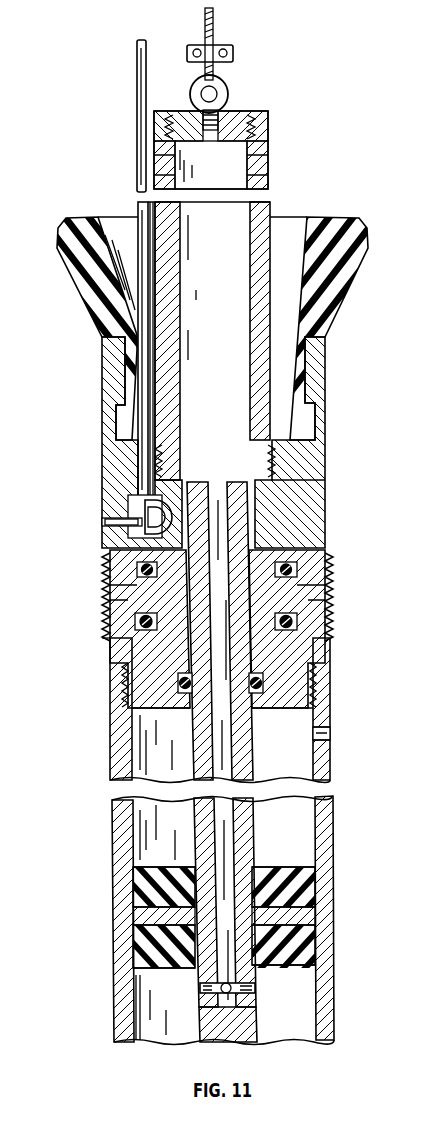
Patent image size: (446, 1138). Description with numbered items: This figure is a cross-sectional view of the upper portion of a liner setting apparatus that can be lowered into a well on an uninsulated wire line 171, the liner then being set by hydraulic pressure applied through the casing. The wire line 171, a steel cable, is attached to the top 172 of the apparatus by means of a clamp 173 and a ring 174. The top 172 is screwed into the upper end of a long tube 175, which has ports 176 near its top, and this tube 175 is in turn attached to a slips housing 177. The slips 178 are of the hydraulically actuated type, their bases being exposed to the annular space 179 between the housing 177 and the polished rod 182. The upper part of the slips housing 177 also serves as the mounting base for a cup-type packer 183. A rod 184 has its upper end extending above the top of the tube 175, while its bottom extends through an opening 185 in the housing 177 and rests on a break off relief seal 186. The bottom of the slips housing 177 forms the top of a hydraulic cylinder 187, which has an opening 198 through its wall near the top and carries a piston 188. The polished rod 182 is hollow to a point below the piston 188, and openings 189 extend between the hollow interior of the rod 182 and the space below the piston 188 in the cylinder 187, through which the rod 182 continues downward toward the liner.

The uninsulated wire line 171 is at (215, 17).
The top 172 is at (236, 139).
The clamp 173 is at (233, 53).
The ring 174 is at (226, 86).
The long tube 175 is at (268, 135).
The ports 176 is at (268, 165).
The slips housing 177 is at (325, 358).
The slips 178 is at (337, 578).
The annular space 179 is at (257, 493).
The polished rod 182 is at (244, 710).
The cup-type packer 183 is at (350, 272).
The rod 184 is at (136, 110).
The opening 185 is at (138, 453).
The break off relief seal 186 is at (140, 521).
The hydraulic cylinder 187 is at (333, 810).
The piston 188 is at (315, 885).
The openings 189 is at (255, 986).
The opening 198 is at (330, 732).